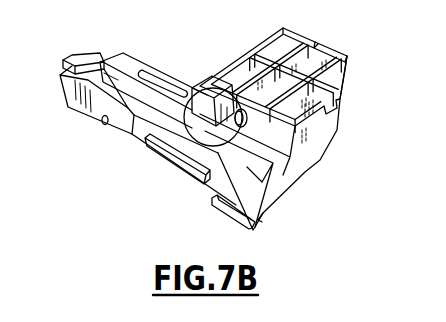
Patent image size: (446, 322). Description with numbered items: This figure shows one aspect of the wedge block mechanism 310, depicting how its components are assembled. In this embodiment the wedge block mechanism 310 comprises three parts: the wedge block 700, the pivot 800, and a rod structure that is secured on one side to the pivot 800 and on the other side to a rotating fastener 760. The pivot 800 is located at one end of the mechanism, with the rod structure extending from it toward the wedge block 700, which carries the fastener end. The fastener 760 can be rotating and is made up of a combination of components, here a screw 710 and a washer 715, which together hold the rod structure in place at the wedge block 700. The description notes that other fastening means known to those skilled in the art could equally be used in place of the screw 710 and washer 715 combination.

The pivot 800 is at (50, 77).
The wedge block mechanism 310 is at (106, 58).
The wedge block 700 is at (209, 86).
The screw 710 is at (280, 199).
The washer 715 is at (188, 183).
The rotating fastener 760 is at (220, 218).